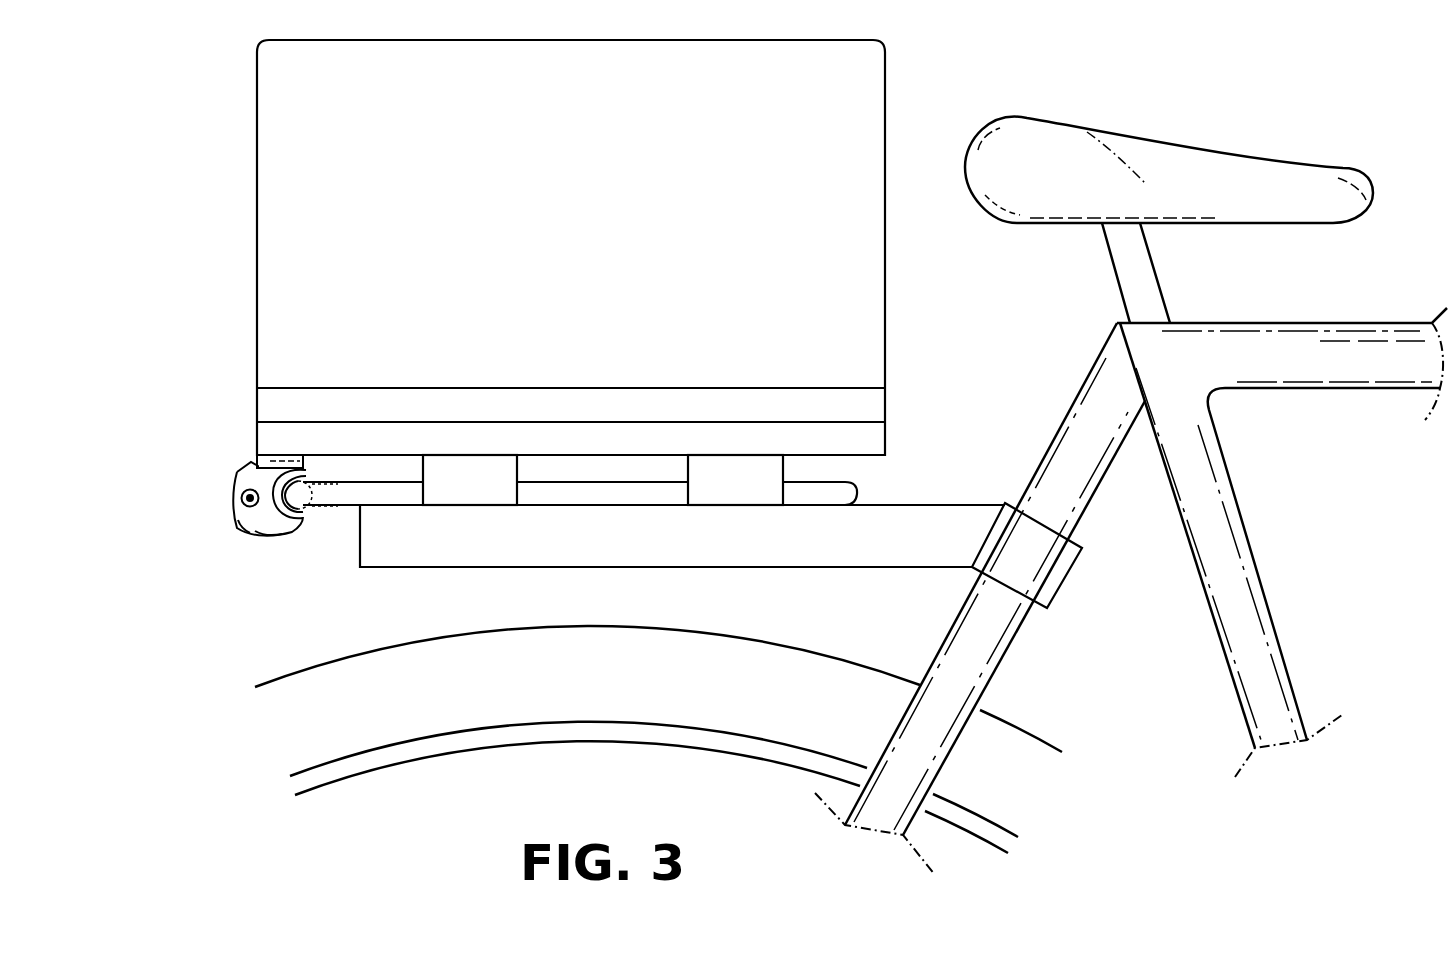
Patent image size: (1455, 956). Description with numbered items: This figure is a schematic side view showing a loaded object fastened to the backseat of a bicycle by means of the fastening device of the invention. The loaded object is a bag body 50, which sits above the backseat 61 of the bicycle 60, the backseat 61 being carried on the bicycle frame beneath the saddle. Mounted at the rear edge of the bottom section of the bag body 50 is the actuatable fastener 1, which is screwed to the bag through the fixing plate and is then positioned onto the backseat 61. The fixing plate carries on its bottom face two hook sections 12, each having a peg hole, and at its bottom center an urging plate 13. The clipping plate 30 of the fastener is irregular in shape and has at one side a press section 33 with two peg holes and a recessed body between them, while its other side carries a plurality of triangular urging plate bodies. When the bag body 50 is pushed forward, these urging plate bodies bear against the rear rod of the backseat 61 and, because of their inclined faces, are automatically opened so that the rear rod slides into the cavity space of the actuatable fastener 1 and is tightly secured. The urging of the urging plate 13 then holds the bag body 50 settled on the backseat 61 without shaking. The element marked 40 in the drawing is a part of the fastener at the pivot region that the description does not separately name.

The actuatable fastener 1 is at (197, 453).
The hook section 12 is at (263, 518).
The urging plate 13 is at (291, 520).
The clipping plate 30 is at (312, 524).
The press section 33 is at (224, 532).
The clamping body 40 is at (242, 498).
The bag body 50 is at (315, 177).
The bicycle 60 is at (1088, 606).
The backseat 61 is at (913, 528).